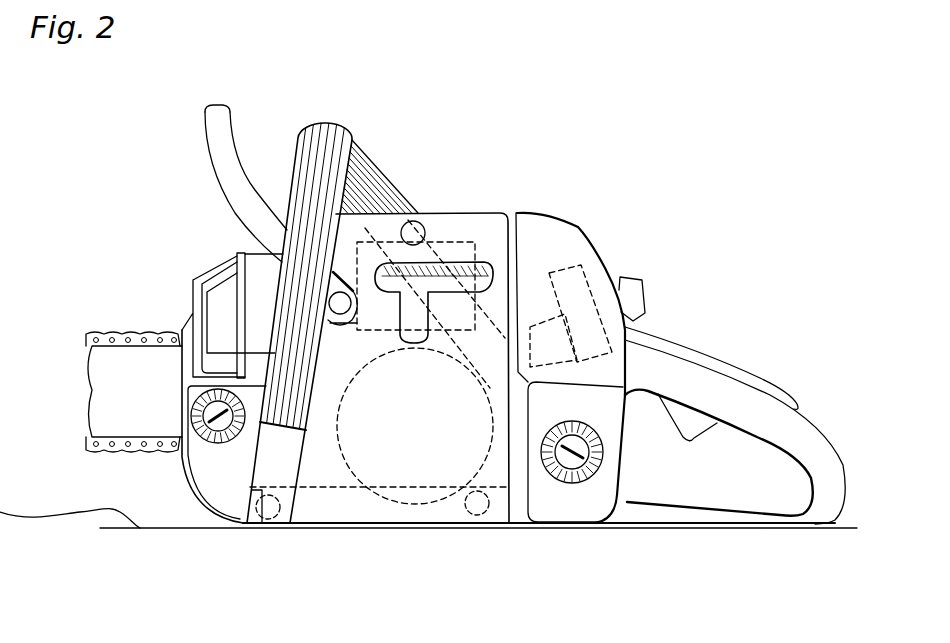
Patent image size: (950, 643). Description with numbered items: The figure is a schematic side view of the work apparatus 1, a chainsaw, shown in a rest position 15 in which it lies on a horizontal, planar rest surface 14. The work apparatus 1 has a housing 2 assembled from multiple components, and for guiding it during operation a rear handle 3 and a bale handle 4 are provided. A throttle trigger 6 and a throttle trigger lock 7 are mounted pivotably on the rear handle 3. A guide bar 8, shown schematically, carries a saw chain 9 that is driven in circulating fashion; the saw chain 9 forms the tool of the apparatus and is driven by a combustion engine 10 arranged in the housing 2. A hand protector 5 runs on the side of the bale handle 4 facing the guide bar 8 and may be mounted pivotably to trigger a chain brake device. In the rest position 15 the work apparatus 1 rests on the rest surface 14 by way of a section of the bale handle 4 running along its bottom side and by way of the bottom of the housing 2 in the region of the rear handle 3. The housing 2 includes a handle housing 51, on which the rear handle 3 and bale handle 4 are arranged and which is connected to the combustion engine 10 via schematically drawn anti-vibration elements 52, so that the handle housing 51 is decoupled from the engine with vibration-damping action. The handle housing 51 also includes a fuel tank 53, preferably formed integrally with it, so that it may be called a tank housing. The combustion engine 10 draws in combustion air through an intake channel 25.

The work apparatus 1 is at (655, 198).
The housing 2 is at (485, 222).
The rear handle 3 is at (693, 380).
The bale handle 4 is at (337, 125).
The hand protector 5 is at (218, 122).
The throttle trigger 6 is at (688, 425).
The throttle trigger lock 7 is at (773, 389).
The guide bar 8 is at (110, 372).
The saw chain 9 is at (158, 331).
The combustion engine 10 is at (458, 262).
The rest surface 14 is at (70, 508).
The rest position 15 is at (177, 237).
The intake channel 25 is at (513, 322).
The handle housing 51 is at (518, 514).
The anti-vibration elements 52 is at (410, 222).
The fuel tank 53 is at (588, 515).